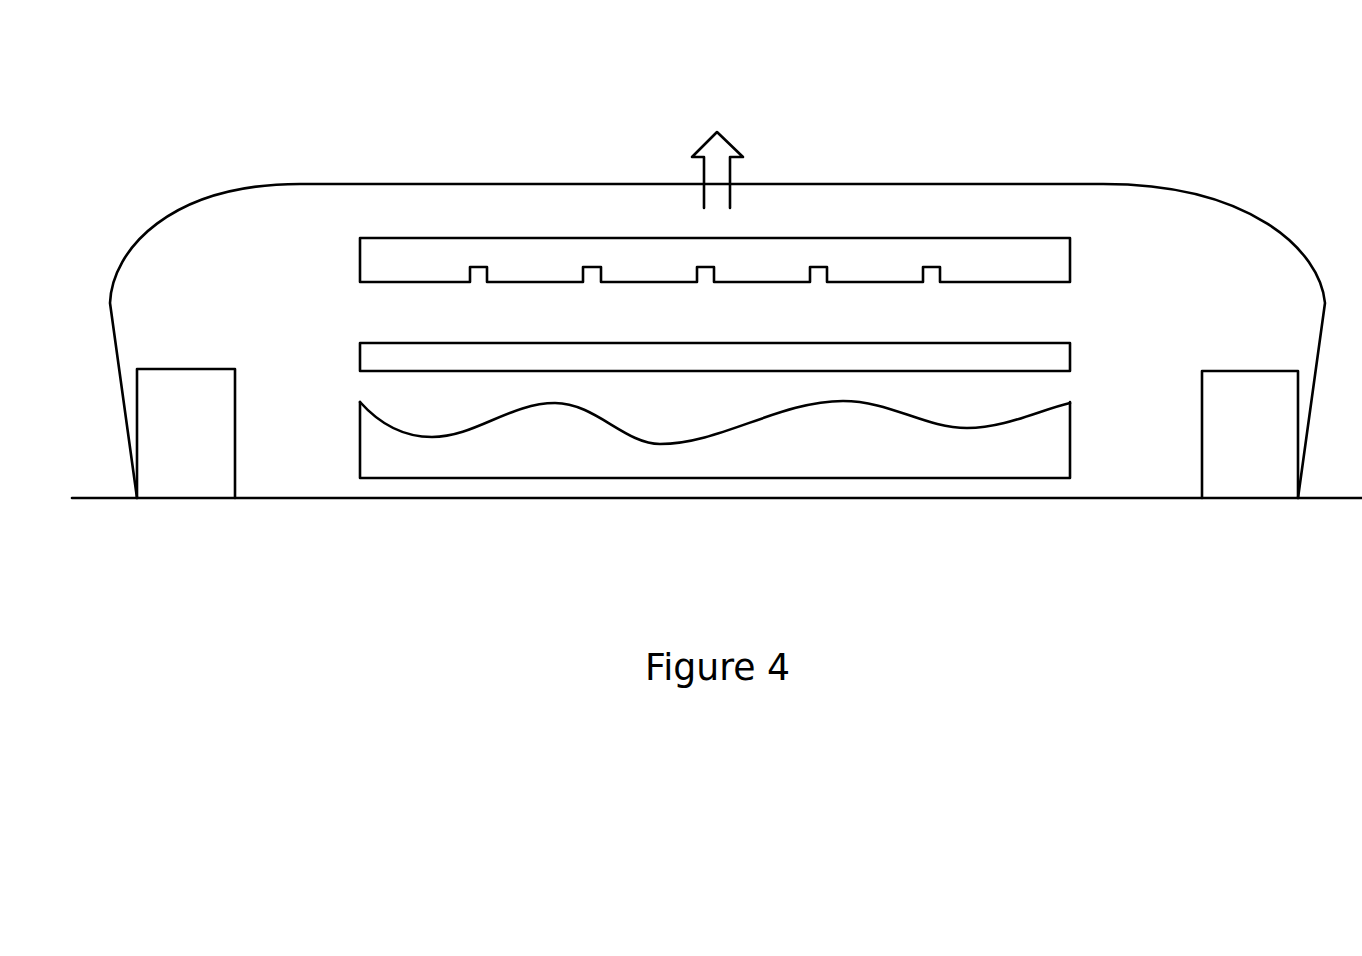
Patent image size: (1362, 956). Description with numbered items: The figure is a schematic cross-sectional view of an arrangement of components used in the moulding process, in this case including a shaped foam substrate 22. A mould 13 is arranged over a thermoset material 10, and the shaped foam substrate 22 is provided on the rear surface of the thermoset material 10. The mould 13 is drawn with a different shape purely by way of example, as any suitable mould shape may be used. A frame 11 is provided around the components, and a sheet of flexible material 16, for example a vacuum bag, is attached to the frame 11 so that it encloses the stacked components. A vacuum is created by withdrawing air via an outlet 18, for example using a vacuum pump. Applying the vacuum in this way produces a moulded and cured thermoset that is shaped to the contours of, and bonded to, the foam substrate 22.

The thermoset material 10 is at (1018, 357).
The frame 11 is at (182, 453).
The mould 13 is at (903, 256).
The sheet of flexible material 16 is at (522, 184).
The outlet 18 is at (738, 137).
The shaped foam substrate 22 is at (815, 433).